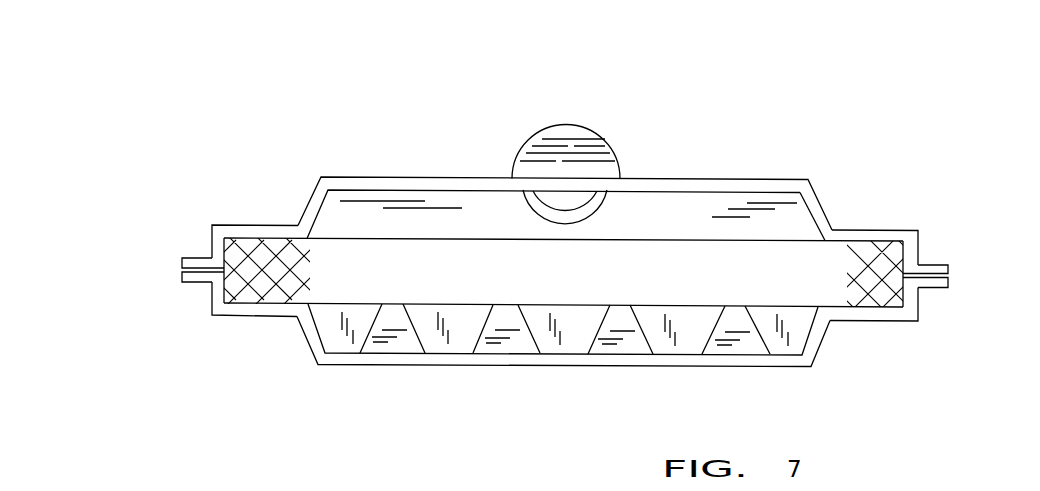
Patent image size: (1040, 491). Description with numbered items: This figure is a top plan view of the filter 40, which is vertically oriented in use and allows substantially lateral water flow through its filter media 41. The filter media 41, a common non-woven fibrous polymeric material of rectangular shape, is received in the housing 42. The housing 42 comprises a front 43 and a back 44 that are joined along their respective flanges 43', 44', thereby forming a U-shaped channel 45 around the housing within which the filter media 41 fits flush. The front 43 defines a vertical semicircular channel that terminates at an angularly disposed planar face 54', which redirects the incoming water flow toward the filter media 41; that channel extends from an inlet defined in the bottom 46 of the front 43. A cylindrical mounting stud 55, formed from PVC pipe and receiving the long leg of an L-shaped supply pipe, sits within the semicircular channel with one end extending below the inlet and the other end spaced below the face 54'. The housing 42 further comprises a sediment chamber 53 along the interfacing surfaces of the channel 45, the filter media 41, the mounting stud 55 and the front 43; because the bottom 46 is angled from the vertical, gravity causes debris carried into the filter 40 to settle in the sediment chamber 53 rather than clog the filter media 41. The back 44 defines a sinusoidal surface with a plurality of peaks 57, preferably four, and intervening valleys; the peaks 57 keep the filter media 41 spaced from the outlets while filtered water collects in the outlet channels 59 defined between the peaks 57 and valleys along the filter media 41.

The filter 40 is at (996, 99).
The filter media 41 is at (578, 278).
The housing 42 is at (262, 180).
The front 43 is at (565, 172).
The flange 43' is at (169, 256).
The back 44 is at (563, 374).
The flange 44' is at (187, 307).
The channel 45 is at (933, 234).
The bottom 46 is at (507, 226).
The sediment chamber 53 is at (803, 202).
The planar face 54' is at (583, 131).
The mounting stud 55 is at (602, 206).
The peaks 57 is at (508, 305).
The outlet channels 59 is at (457, 368).